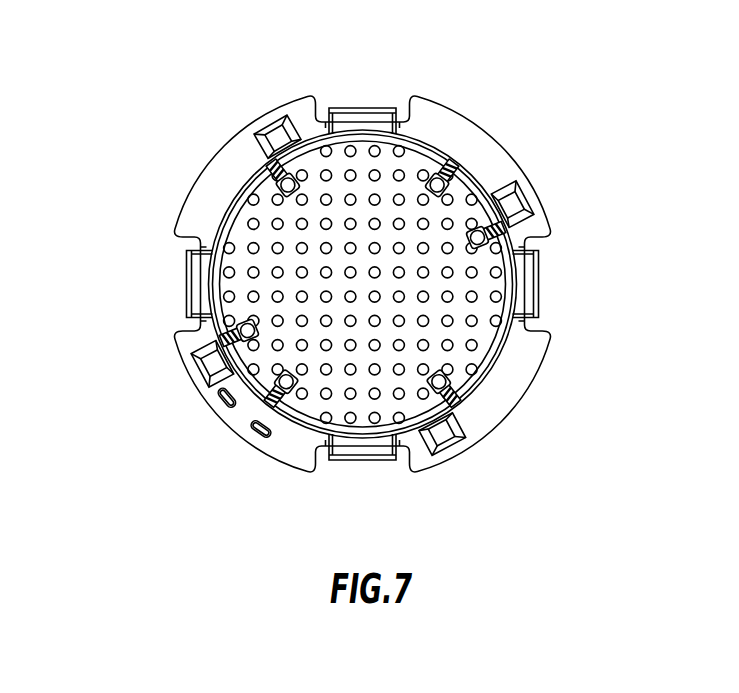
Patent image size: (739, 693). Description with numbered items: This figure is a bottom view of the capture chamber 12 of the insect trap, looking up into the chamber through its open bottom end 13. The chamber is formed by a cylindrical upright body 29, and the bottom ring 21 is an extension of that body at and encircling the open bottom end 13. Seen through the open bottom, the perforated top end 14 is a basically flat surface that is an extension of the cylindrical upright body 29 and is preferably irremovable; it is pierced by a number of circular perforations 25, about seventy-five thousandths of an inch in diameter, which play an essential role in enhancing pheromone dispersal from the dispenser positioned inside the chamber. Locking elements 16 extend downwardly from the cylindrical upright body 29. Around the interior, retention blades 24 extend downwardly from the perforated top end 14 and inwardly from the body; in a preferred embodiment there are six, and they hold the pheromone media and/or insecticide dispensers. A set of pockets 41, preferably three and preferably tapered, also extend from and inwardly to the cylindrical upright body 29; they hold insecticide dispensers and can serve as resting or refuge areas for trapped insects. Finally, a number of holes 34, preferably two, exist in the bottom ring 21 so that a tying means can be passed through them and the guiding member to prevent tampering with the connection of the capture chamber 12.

The capture chamber 12 is at (162, 116).
The open bottom end 13 is at (481, 181).
The perforated top end 14 is at (410, 177).
The locking elements 16 is at (360, 117).
The bottom ring 21 is at (496, 432).
The retention blades 24 is at (452, 389).
The perforations 25 is at (476, 271).
The cylindrical upright body 29 is at (375, 427).
The holes 34 is at (217, 410).
The set of pockets 41 is at (521, 202).